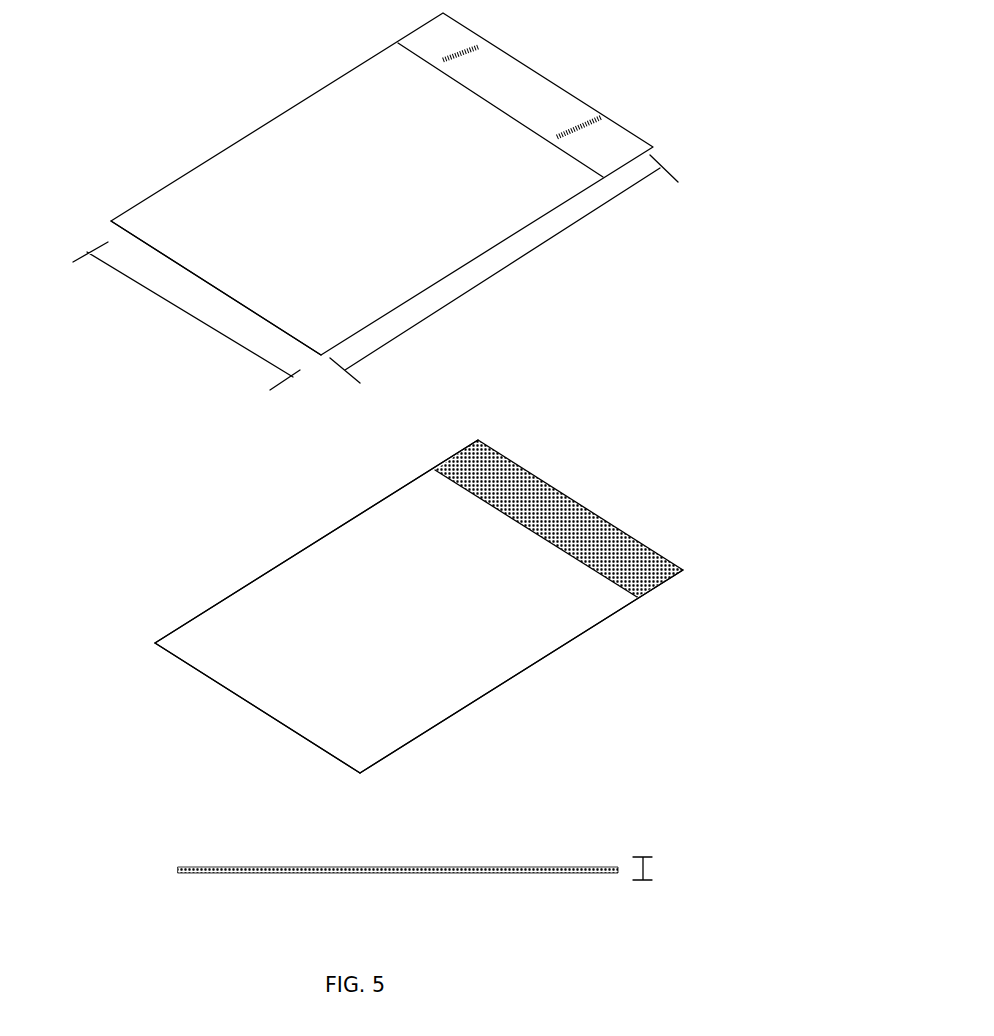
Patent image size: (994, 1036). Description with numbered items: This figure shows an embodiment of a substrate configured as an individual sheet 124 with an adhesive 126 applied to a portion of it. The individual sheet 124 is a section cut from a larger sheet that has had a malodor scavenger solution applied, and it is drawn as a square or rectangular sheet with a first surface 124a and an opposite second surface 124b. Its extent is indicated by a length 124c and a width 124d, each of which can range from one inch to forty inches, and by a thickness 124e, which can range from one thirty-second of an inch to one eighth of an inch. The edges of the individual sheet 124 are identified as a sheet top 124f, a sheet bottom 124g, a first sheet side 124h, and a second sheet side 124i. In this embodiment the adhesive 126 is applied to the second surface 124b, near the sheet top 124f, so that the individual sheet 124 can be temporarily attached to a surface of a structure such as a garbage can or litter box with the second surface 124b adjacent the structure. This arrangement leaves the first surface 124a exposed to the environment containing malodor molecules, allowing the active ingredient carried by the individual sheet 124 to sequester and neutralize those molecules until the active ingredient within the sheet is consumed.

The individual sheet 124 is at (125, 96).
The first surface 124a is at (317, 128).
The second surface 124b is at (373, 530).
The length 124c is at (503, 272).
The width 124d is at (170, 306).
The thickness 124e is at (650, 872).
The sheet top 124f is at (512, 60).
The sheet bottom 124g is at (135, 242).
The first sheet side 124h is at (313, 542).
The second sheet side 124i is at (517, 675).
The adhesive 126 is at (590, 527).